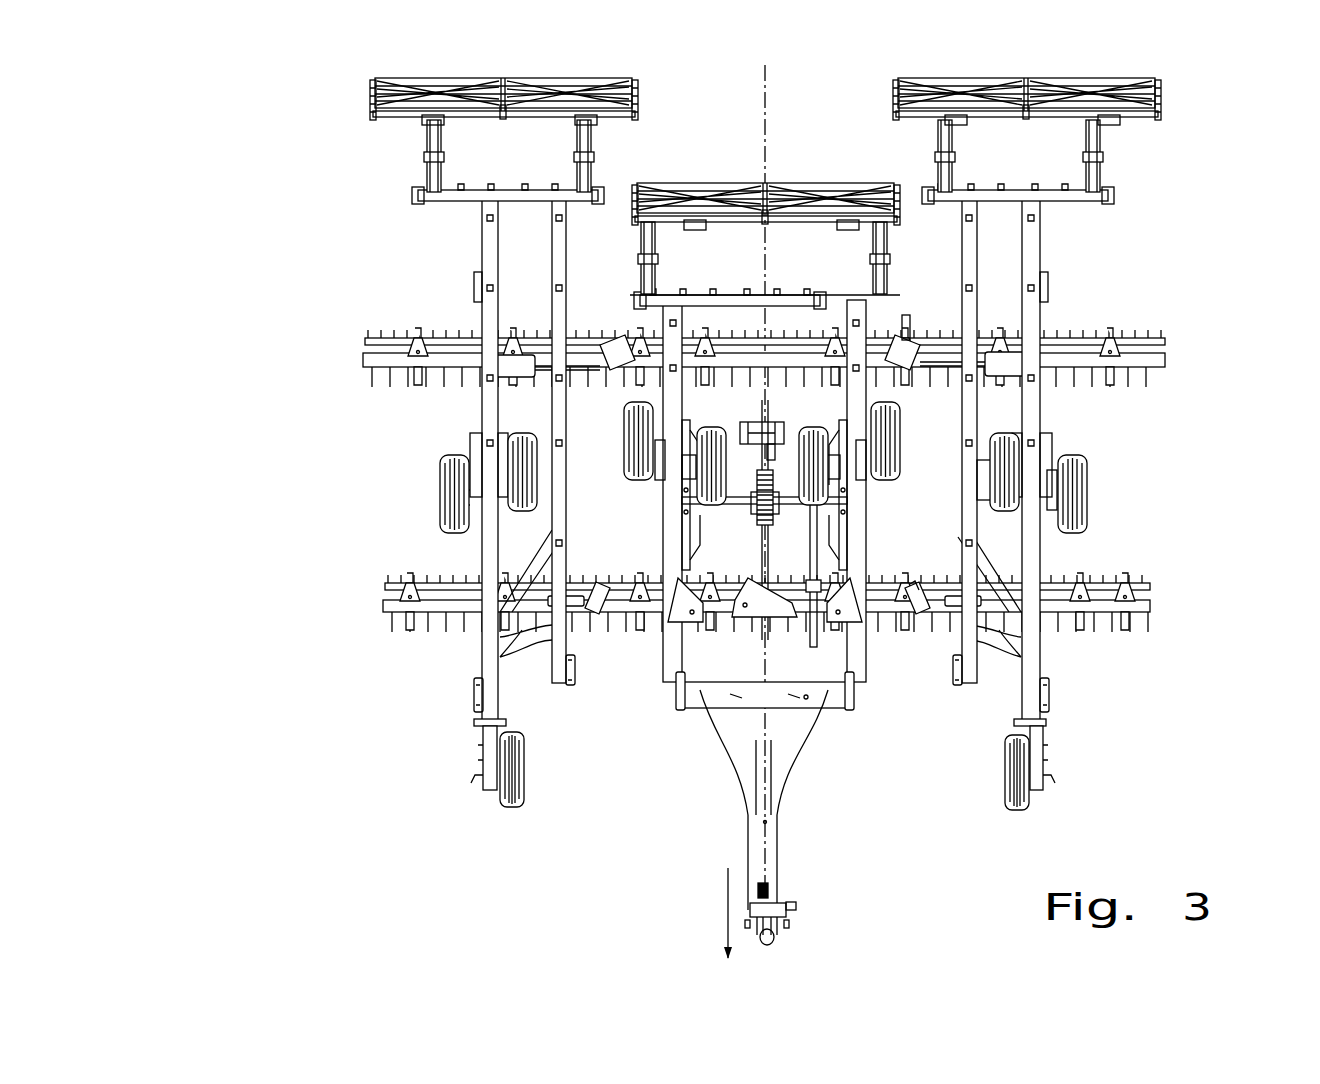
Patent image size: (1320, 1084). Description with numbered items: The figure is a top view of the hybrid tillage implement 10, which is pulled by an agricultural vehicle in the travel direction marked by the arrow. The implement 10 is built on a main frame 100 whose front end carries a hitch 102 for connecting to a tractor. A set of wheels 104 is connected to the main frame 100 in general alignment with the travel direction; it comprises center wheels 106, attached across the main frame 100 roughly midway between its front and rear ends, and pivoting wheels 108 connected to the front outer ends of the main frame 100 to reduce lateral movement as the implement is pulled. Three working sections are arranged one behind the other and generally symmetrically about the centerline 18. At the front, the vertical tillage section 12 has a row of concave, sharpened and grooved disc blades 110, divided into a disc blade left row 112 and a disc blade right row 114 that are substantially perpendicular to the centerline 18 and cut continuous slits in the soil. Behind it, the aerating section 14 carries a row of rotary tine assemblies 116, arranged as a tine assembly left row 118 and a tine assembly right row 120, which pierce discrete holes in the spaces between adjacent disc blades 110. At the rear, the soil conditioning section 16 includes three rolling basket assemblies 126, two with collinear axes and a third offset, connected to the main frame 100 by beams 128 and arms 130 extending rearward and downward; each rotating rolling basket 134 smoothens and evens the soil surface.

The tillage implement 10 is at (232, 135).
The vertical tillage section 12 is at (365, 607).
The aerating section 14 is at (358, 357).
The soil conditioning section 16 is at (345, 170).
The centerline 18 is at (772, 92).
The main frame 100 is at (1032, 690).
The hitch 102 is at (782, 910).
The set of wheels 104 is at (1057, 752).
The center wheels 106 is at (440, 490).
The pivoting wheels 108 is at (510, 805).
The disc blades 110 is at (430, 625).
The disc blade left row 112 is at (920, 645).
The disc blade right row 114 is at (620, 650).
The rotary tine assemblies 116 is at (386, 380).
The tine assembly left row 118 is at (1090, 318).
The tine assembly right row 120 is at (418, 335).
The rolling basket assemblies 126 is at (358, 100).
The beams 128 is at (458, 198).
The arms 130 is at (428, 160).
The rolling basket 134 is at (568, 85).